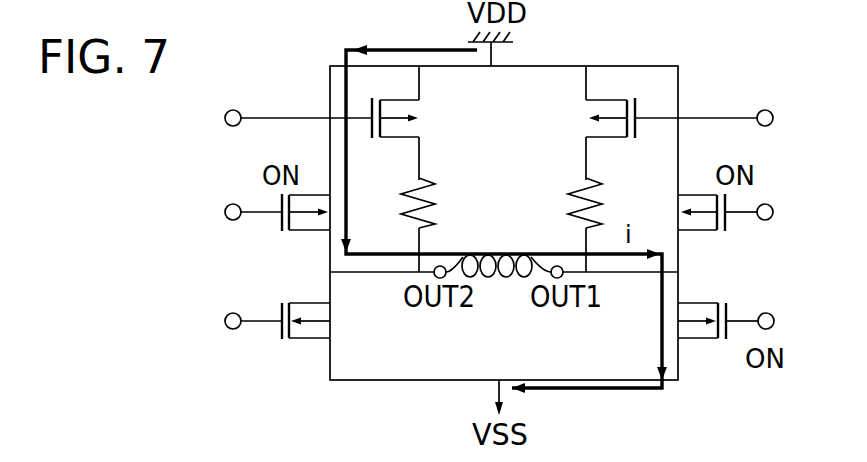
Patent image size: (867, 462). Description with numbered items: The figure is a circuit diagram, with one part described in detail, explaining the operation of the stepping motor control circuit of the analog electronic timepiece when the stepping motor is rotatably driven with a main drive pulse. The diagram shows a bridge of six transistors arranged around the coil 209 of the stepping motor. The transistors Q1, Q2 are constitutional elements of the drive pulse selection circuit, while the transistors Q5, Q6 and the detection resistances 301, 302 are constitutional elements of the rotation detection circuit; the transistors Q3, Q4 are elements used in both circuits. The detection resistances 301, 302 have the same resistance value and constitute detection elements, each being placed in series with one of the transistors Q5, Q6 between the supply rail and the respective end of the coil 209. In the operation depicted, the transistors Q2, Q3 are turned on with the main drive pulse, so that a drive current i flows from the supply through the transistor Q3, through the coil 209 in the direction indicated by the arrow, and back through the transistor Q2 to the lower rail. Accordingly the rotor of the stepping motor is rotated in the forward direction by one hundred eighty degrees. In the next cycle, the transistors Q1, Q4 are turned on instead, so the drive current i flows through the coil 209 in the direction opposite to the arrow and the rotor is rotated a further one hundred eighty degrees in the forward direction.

The detection resistance 301 is at (472, 182).
The detection resistance 302 is at (567, 210).
The coil 209 is at (500, 280).
The transistor Q1 is at (282, 348).
The transistor Q2 is at (722, 345).
The transistor Q3 is at (282, 240).
The transistor Q4 is at (723, 236).
The transistor Q5 is at (374, 140).
The transistor Q6 is at (630, 140).